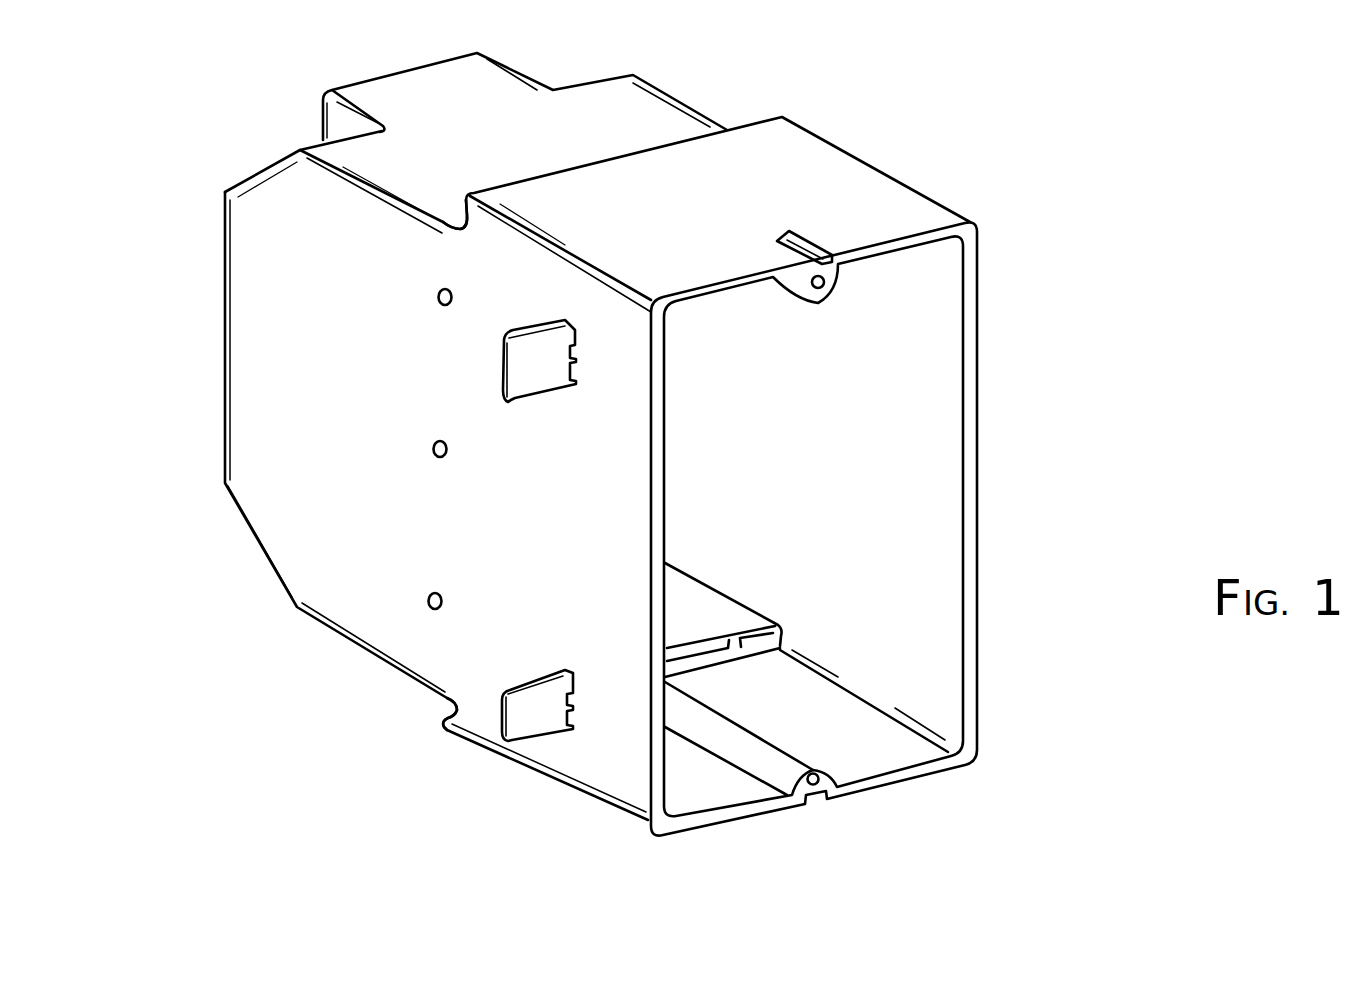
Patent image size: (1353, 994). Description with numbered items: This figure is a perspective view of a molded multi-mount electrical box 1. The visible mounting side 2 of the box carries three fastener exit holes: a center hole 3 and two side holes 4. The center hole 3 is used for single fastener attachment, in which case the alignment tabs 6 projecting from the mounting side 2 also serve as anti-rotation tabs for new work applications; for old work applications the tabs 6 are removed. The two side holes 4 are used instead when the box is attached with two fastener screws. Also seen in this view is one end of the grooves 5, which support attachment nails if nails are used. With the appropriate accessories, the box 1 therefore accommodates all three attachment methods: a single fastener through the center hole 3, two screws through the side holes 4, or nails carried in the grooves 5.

The molded multi-mount electrical box 1 is at (902, 107).
The mounting side 2 is at (285, 393).
The center hole 3 is at (415, 450).
The side holes 4 is at (423, 298).
The grooves 5 is at (452, 213).
The alignment tabs 6 is at (528, 377).